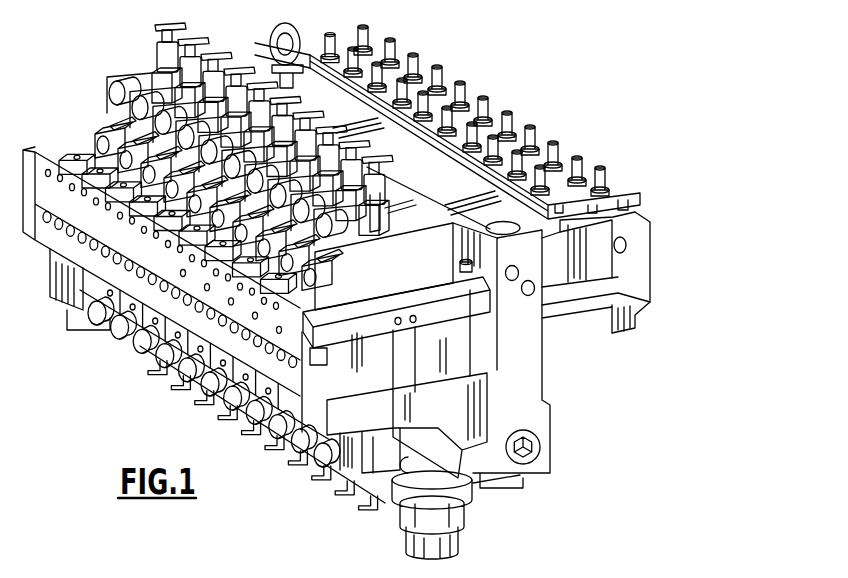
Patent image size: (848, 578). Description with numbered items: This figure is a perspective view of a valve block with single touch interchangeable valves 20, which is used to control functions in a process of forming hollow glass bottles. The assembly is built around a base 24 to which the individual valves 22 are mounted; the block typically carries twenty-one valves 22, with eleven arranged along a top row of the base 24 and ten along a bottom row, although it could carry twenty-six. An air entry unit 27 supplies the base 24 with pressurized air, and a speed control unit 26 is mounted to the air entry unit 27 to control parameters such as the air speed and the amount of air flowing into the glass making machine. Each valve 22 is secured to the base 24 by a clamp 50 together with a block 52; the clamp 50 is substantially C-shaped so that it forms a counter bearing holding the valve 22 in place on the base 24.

The valve block with single touch interchangeable valves 20 is at (668, 84).
The valve 22 is at (397, 262).
The base 24 is at (165, 267).
The speed control unit 26 is at (592, 247).
The air entry unit 27 is at (445, 183).
The clamp 50 is at (94, 160).
The block 52 is at (480, 285).